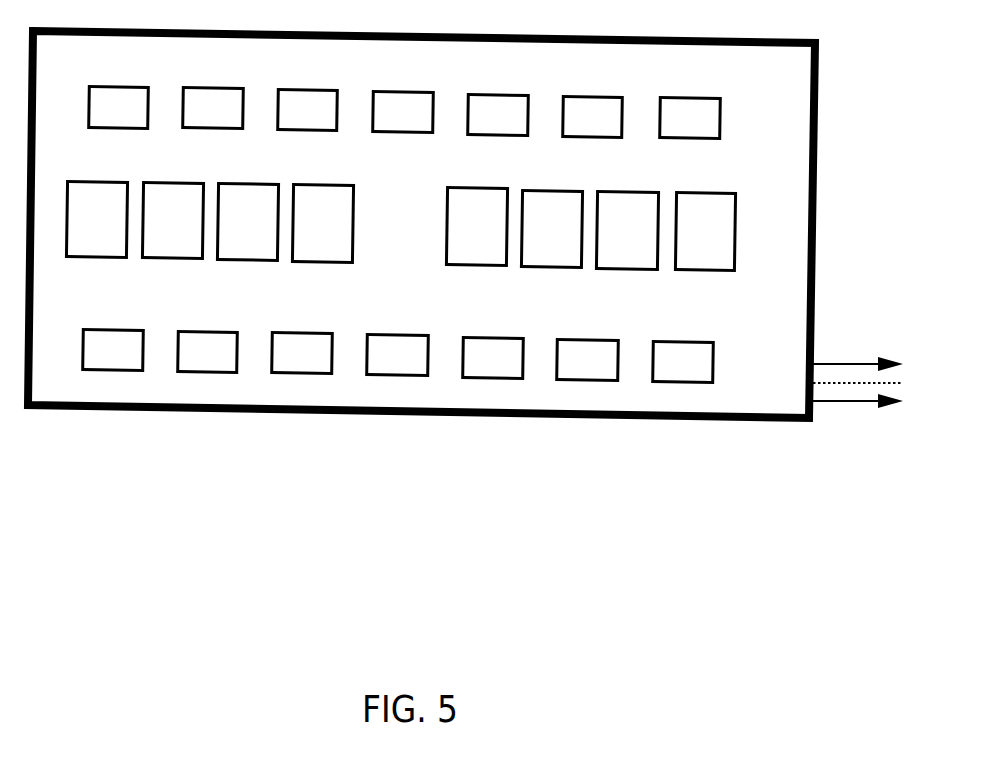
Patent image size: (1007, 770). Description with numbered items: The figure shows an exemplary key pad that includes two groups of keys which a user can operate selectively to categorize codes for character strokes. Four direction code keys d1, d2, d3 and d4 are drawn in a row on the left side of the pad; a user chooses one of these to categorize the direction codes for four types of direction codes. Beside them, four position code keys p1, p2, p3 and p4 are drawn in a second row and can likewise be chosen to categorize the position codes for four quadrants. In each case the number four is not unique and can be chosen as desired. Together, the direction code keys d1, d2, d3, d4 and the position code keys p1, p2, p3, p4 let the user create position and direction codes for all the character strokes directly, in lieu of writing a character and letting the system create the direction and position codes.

The direction code key d1 is at (96, 220).
The direction code key d2 is at (172, 221).
The direction code key d3 is at (247, 222).
The direction code key d4 is at (322, 224).
The position code key p1 is at (476, 227).
The position code key p2 is at (551, 229).
The position code key p3 is at (627, 231).
The position code key p4 is at (705, 232).